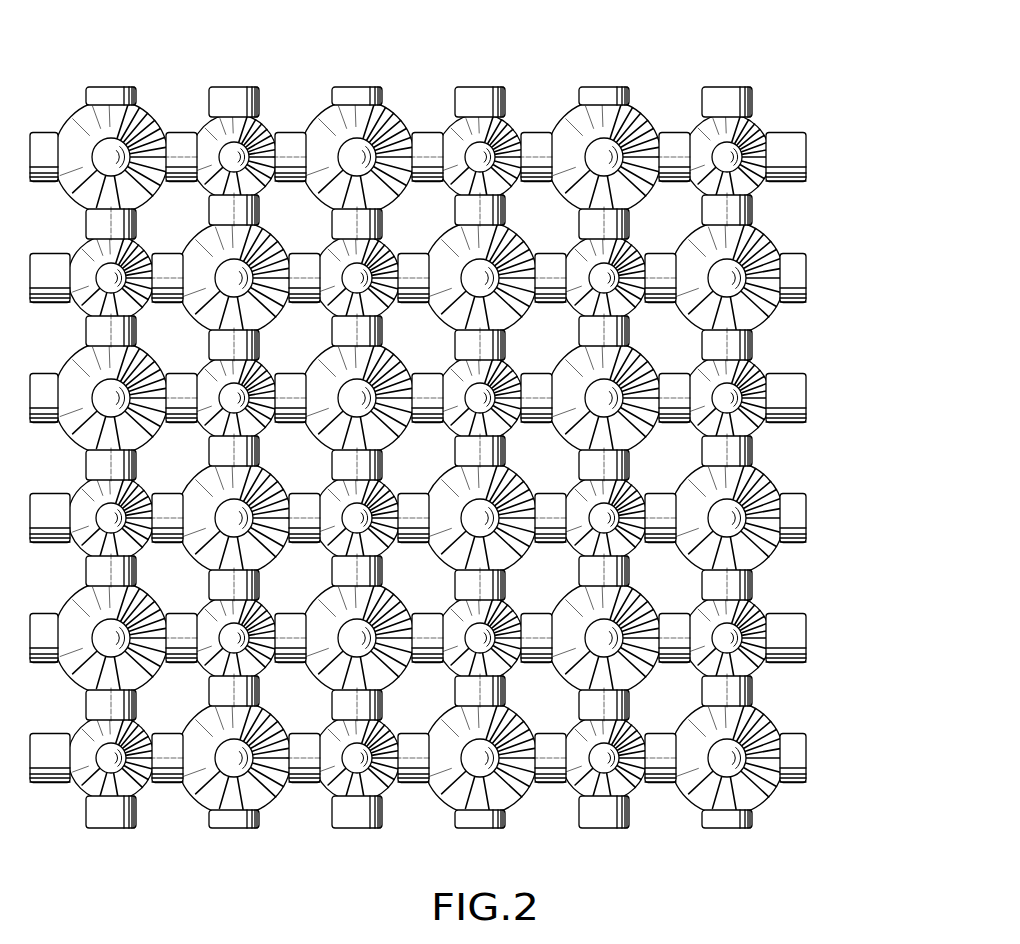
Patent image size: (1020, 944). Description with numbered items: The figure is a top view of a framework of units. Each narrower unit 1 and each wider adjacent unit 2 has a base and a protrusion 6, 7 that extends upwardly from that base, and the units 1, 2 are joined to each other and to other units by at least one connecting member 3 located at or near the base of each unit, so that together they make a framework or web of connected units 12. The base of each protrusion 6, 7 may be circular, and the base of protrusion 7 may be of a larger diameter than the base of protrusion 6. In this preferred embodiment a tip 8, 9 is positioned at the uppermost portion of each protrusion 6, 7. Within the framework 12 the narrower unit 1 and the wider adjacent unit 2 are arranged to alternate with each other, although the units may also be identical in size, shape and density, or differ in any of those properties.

The unit 1 is at (764, 131).
The adjacent unit 2 is at (582, 109).
The connecting member 3 is at (465, 207).
The protrusion 6 is at (762, 182).
The protrusion 7 is at (638, 127).
The tip 8 is at (738, 142).
The tip 9 is at (600, 152).
The framework of connected units 12 is at (468, 230).